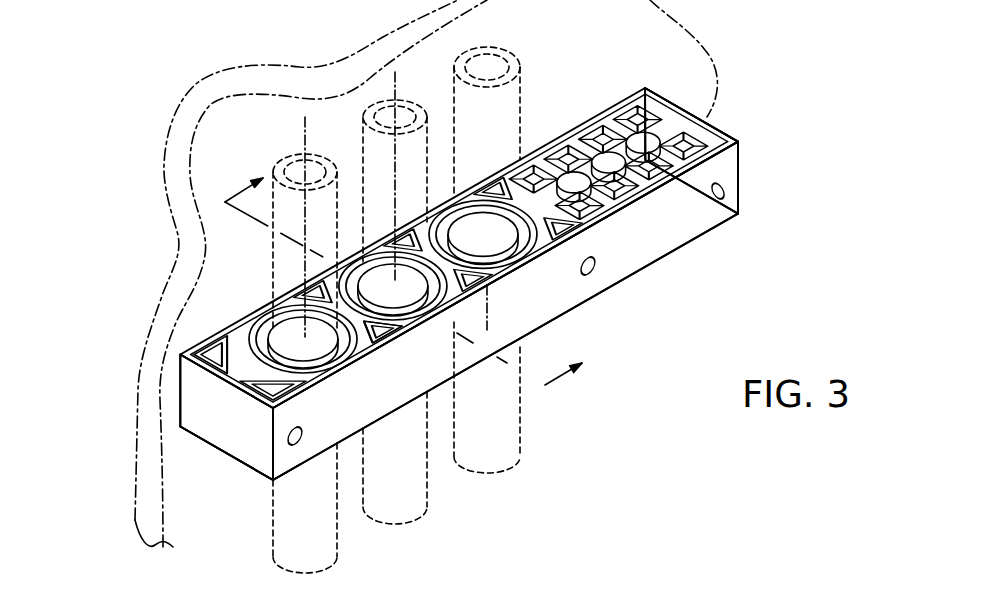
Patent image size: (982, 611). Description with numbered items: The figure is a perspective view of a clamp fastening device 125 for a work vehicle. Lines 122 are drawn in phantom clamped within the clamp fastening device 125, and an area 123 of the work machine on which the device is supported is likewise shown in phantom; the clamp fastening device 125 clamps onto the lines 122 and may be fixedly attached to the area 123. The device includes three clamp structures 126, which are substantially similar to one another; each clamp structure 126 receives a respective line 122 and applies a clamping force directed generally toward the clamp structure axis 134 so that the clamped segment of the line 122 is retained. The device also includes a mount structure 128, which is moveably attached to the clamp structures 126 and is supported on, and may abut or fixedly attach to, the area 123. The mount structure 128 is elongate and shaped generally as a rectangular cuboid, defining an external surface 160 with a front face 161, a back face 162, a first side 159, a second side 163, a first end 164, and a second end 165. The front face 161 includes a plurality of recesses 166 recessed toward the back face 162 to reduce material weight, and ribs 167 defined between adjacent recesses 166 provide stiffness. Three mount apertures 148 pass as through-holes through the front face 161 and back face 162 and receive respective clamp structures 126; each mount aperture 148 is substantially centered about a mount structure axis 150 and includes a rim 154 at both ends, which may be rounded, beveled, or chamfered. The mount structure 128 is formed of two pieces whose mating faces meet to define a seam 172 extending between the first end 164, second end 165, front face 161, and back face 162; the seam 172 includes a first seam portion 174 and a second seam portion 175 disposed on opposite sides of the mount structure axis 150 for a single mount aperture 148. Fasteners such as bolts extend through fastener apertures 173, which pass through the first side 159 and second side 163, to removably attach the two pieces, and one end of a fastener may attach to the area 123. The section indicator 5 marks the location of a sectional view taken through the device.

The section line 5- 5 is at (417, 274).
The lines 122 is at (518, 80).
The area 123 is at (165, 352).
The clamp fastening device 125 is at (725, 110).
The clamp structure 126 is at (482, 233).
The mount structure 128 is at (752, 163).
The clamp structure axis 134 is at (383, 87).
The mount aperture 148 is at (433, 222).
The mount structure axis 150 is at (303, 142).
The rim 154 is at (292, 306).
The first side 159 is at (338, 428).
The external surface 160 is at (677, 235).
The front face 161 is at (607, 112).
The back face 162 is at (696, 238).
The second side 163 is at (620, 117).
The first end 164 is at (192, 425).
The second end 165 is at (672, 104).
The recesses 166 is at (553, 157).
The ribs 167 is at (556, 262).
The seam 172 is at (266, 486).
The fastener apertures 173 is at (300, 452).
The first seam portion 174 is at (237, 320).
The second seam portion 175 is at (355, 318).